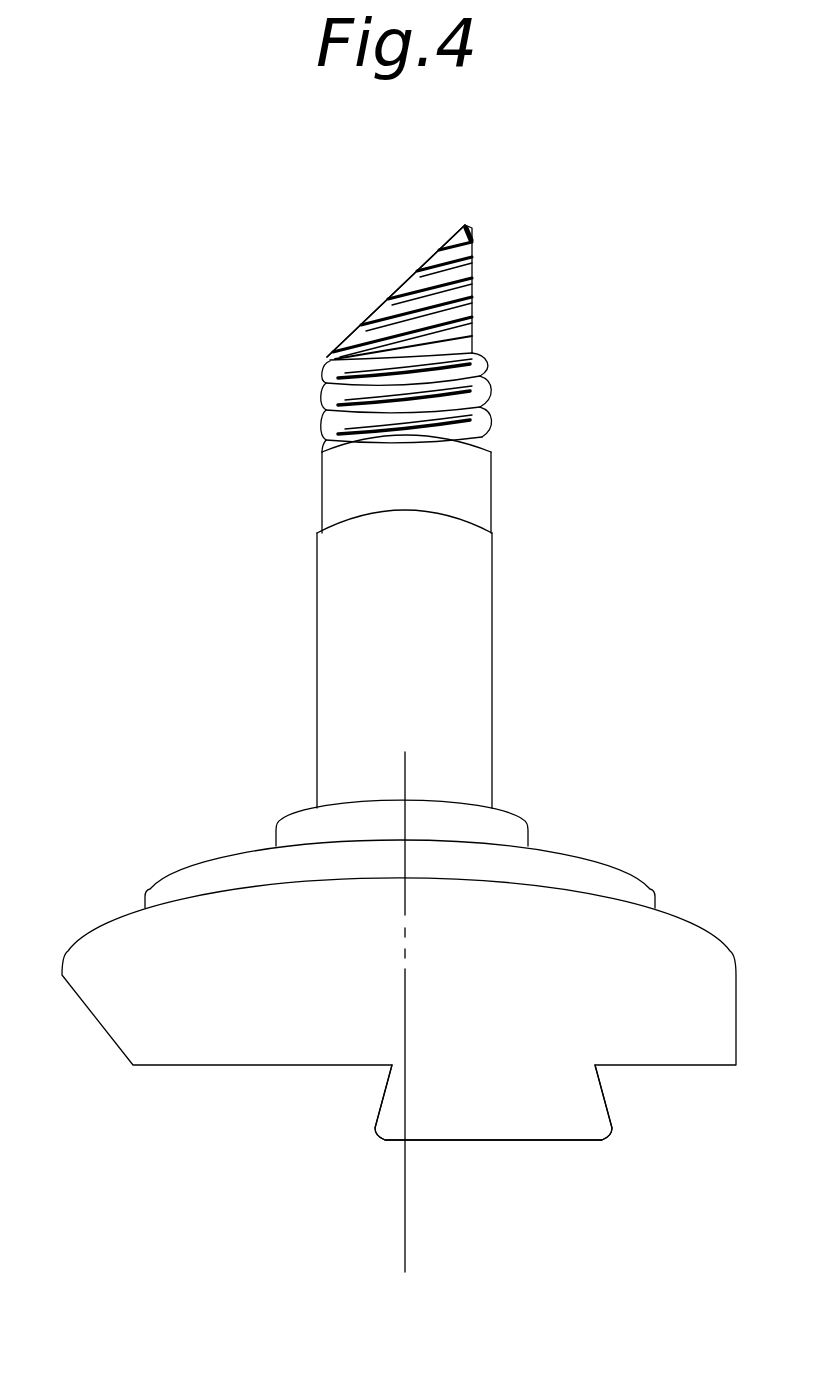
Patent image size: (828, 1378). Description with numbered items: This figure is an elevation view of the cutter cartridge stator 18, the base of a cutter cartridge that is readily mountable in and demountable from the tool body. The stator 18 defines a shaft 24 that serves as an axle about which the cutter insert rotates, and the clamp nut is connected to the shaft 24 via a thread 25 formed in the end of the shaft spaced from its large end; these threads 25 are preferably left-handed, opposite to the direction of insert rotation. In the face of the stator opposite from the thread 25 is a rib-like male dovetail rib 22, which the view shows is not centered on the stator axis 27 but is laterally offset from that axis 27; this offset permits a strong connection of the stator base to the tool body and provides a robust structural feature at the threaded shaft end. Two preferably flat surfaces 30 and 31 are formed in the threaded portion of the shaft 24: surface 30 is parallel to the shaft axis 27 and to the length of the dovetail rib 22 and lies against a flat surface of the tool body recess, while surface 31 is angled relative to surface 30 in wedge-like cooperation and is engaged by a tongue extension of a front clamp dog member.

The cutter cartridge stator 18 is at (568, 698).
The male dovetail rib 22 is at (532, 1122).
The shaft 24 is at (333, 648).
The thread 25 is at (490, 397).
The stator axis 27 is at (405, 1222).
The surface 30 is at (472, 287).
The surface 31 is at (390, 295).